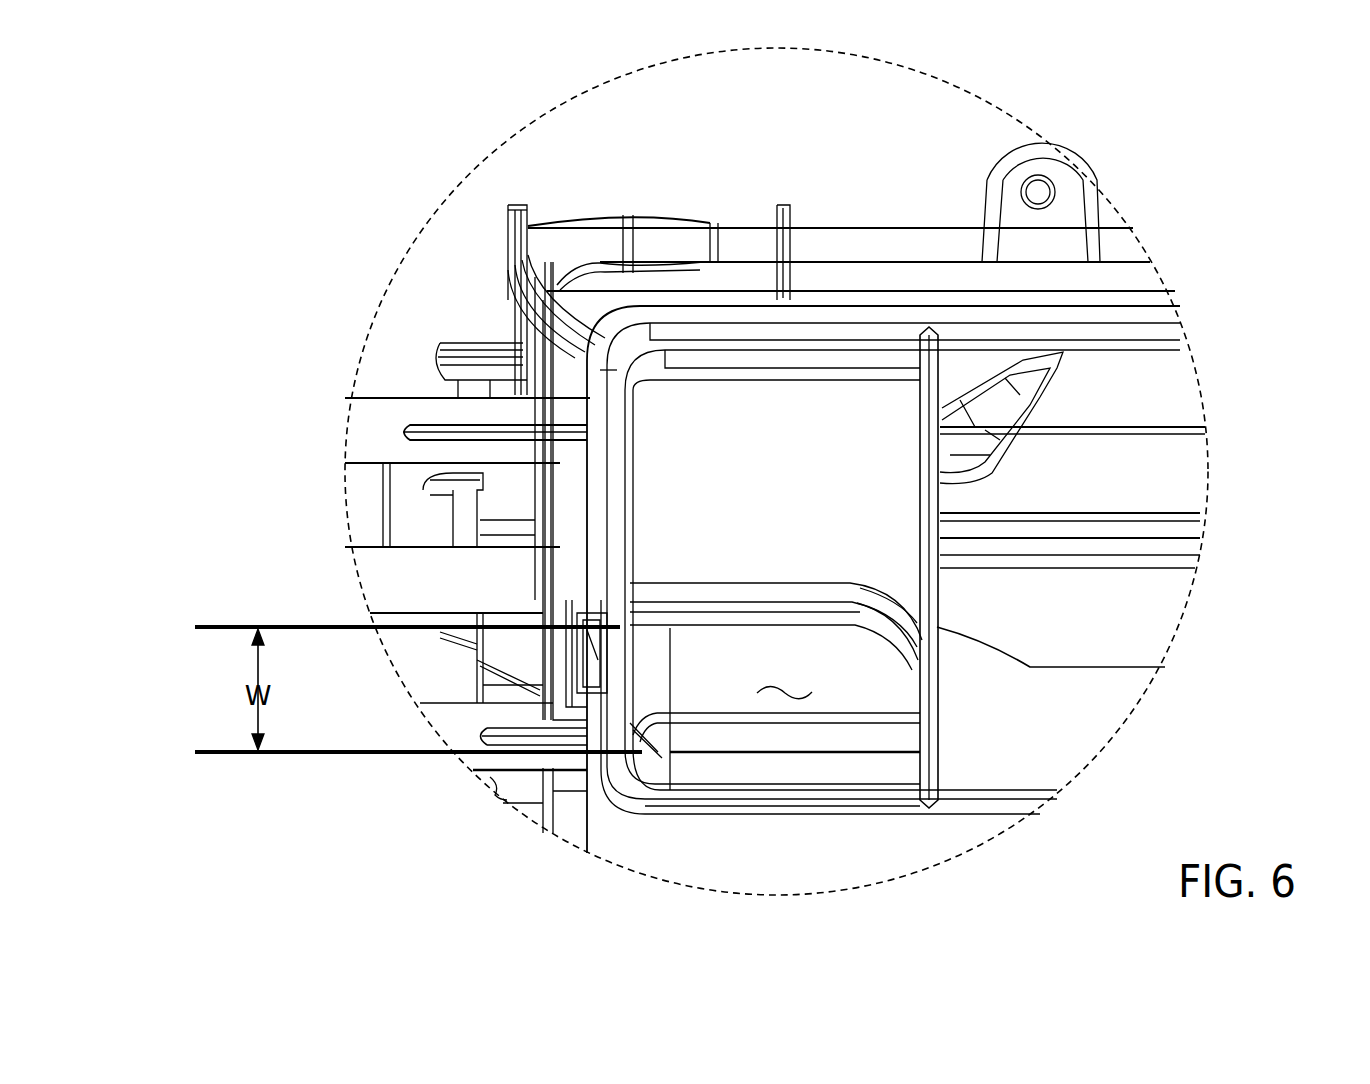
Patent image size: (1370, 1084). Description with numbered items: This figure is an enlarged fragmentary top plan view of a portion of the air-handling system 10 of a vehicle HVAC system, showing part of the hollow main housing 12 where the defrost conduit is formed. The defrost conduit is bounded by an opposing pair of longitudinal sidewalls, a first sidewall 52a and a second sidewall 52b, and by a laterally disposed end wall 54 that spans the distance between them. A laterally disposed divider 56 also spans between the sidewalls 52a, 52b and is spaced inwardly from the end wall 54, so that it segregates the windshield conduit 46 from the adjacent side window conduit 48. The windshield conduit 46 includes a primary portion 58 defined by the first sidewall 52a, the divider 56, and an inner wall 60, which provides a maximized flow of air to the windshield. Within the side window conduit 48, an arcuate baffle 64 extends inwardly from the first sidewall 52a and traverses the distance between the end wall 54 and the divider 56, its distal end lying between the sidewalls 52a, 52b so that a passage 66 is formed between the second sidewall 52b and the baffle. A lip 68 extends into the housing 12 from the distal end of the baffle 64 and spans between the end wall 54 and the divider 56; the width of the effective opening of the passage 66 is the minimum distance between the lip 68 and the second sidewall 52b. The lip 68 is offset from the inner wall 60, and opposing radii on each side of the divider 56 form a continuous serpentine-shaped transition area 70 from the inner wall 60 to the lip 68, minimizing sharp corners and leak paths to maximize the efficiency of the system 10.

The air-handling system 10 is at (598, 168).
The main housing 12 is at (549, 225).
The windshield conduit 46 is at (1108, 418).
The side window conduit 48 is at (832, 469).
The first sidewall 52a is at (740, 307).
The second sidewall 52b is at (840, 817).
The end wall 54 is at (607, 572).
The divider 56 is at (940, 365).
The primary portion 58 is at (1120, 473).
The inner wall 60 is at (1123, 667).
The baffle 64 is at (708, 507).
The passage 66 is at (787, 697).
The lip 68 is at (747, 618).
The transition area 70 is at (900, 637).